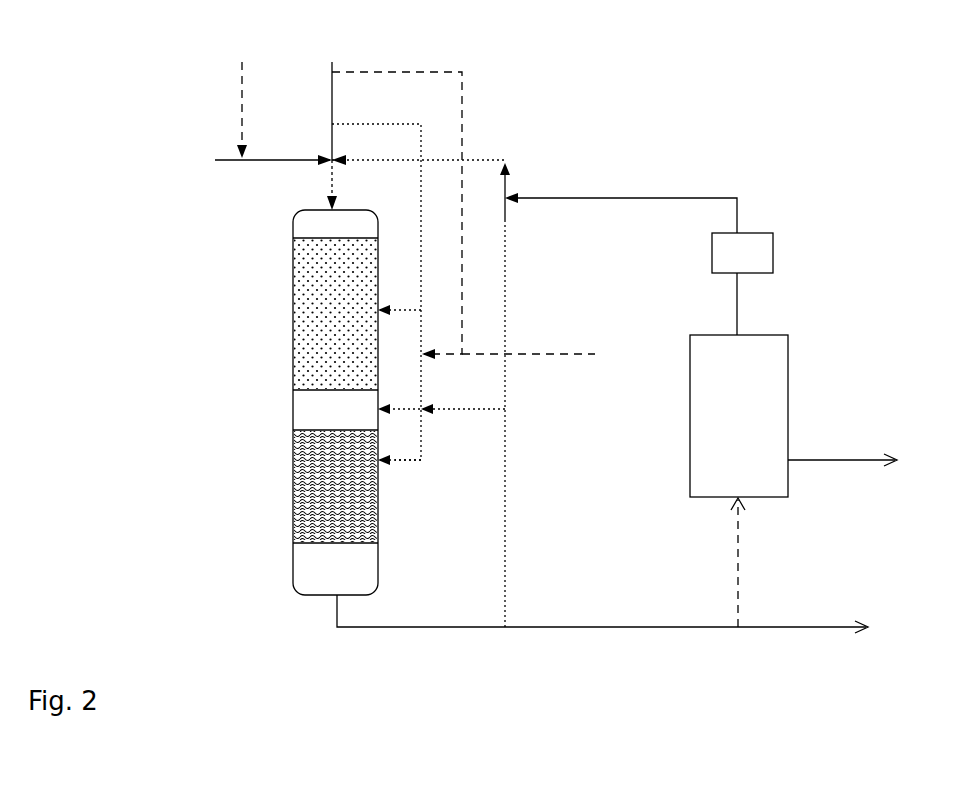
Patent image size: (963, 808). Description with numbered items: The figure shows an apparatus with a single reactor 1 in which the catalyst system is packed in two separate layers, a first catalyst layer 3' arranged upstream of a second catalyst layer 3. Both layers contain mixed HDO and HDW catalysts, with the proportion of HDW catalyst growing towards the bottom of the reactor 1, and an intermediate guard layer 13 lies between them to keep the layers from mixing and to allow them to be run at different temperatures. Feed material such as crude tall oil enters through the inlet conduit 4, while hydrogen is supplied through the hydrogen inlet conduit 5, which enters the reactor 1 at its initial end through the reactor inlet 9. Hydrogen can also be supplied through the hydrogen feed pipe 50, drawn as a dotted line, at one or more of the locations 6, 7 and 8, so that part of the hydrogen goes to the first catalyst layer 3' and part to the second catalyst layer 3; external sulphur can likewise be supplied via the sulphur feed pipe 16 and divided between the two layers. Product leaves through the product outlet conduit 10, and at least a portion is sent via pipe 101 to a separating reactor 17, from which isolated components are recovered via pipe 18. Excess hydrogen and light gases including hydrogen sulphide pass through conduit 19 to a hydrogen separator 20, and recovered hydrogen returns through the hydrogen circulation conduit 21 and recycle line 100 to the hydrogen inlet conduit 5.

The reactor 1 is at (293, 590).
The second catalyst layer 3 is at (284, 486).
The first catalyst layer 3' is at (281, 314).
The inlet conduit 4 is at (240, 156).
The hydrogen inlet conduit 5 is at (332, 86).
The hydrogen feed location 6 is at (399, 296).
The hydrogen feed location 7 is at (441, 395).
The hydrogen feed location 8 is at (404, 445).
The reactor inlet 9 is at (338, 185).
The product outlet conduit 10 is at (602, 614).
The intermediate guard layer 13 is at (290, 409).
The sulphur feed pipe 16 is at (394, 210).
The separating reactor 17 is at (772, 420).
The pipe 18 is at (842, 477).
The conduit 19 is at (756, 304).
The hydrogen separator 20 is at (762, 258).
The hydrogen circulation conduit 21 is at (621, 198).
The hydrogen feed pipe 50 is at (376, 279).
The recycle line 100 is at (444, 391).
The pipe 101 is at (761, 562).